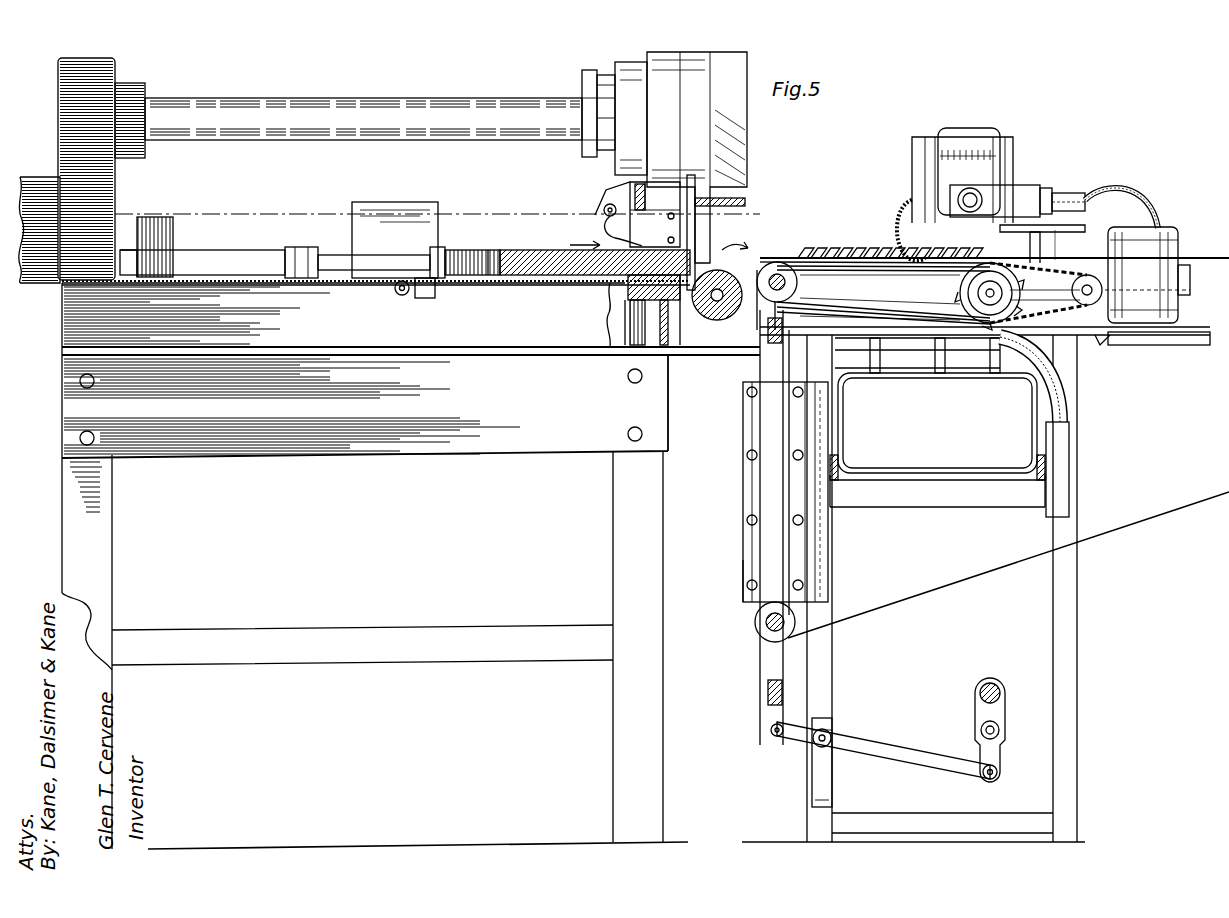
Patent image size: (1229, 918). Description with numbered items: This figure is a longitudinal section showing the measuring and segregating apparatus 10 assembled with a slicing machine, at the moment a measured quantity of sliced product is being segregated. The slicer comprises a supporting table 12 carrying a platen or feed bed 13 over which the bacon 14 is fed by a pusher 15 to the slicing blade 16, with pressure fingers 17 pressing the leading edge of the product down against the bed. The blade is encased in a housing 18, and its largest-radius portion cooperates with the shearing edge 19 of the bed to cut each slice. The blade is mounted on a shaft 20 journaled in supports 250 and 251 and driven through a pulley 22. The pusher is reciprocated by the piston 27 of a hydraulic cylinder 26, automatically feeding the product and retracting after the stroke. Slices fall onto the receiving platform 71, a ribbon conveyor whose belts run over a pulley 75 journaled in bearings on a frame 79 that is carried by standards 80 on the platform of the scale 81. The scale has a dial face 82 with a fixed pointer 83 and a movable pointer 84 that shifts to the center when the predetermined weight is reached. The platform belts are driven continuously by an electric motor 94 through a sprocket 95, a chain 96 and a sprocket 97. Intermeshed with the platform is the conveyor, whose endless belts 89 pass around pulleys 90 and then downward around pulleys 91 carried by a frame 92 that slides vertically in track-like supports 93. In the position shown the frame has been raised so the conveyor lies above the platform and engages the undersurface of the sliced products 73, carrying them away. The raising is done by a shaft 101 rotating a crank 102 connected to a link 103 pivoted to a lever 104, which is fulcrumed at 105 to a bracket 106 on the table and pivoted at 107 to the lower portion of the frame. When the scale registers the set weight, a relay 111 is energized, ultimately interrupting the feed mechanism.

The measuring and segregating apparatus 10 is at (1073, 181).
The supporting table 12 is at (72, 507).
The platen or feed bed 13 is at (357, 280).
The bacon 14 is at (546, 276).
The pusher 15 is at (494, 244).
The slicing blade 16 is at (720, 225).
The pressure fingers 17 is at (605, 240).
The housing 18 is at (738, 84).
The shearing edge 19 is at (712, 320).
The shaft 20 is at (515, 98).
The pulley 22 is at (1160, 255).
The hydraulic cylinder 26 is at (270, 252).
The piston 27 is at (398, 256).
The receiving platform 71 is at (762, 262).
The sliced products 73 is at (835, 248).
The pulley 75 is at (766, 275).
The frame 79 is at (818, 330).
The standards 80 is at (985, 375).
The scale 81 is at (937, 440).
The dial or face 82 is at (930, 160).
The fixed pointer 83 is at (964, 150).
The movable pointer 84 is at (965, 185).
The endless belts 89 is at (745, 497).
The pulleys 90 is at (798, 292).
The pulleys 91 is at (770, 635).
The frame 92 is at (775, 368).
The track-like supports 93 is at (745, 566).
The electric motor 94 is at (1152, 230).
The sprocket 95 is at (1090, 336).
The chain 96 is at (1075, 283).
The sprocket 97 is at (952, 300).
The shaft 101 is at (998, 690).
The crank 102 is at (1008, 714).
The link 103 is at (1005, 766).
The lever 104 is at (922, 755).
The fulcrum 105 is at (815, 745).
The bracket 106 is at (833, 779).
The pivot 107 is at (770, 735).
The relay 111 is at (1072, 455).
The support 250 is at (135, 158).
The support 251 is at (620, 160).